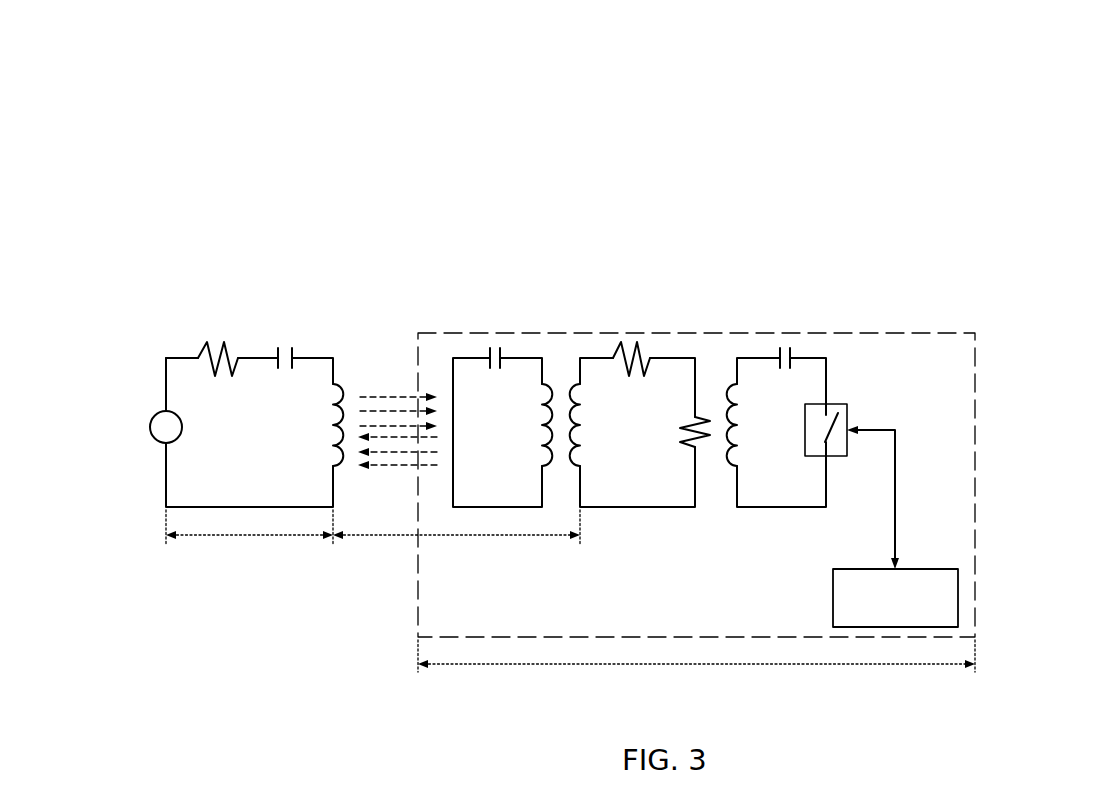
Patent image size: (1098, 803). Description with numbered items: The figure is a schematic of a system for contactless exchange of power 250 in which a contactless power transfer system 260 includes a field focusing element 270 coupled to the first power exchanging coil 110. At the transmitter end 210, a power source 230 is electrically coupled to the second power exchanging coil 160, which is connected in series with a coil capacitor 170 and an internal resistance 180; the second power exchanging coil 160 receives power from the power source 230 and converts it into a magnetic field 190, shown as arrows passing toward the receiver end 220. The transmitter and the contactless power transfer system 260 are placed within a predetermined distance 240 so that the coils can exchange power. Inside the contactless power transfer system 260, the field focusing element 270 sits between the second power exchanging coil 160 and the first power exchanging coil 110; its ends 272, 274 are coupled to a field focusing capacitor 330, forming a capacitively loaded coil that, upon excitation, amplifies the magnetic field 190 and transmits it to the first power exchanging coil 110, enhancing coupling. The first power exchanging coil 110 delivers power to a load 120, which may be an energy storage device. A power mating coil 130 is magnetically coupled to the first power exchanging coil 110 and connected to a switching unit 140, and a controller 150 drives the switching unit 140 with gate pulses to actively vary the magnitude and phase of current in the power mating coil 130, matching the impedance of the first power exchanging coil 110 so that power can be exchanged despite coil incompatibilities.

The first power exchanging coil 110 is at (671, 357).
The load 120 is at (681, 427).
The power mating coil 130 is at (805, 357).
The switching unit 140 is at (849, 407).
The controller 150 is at (931, 568).
The second power exchanging coil 160 is at (186, 357).
The coil capacitor 170 is at (292, 350).
The resistance 180 is at (226, 350).
The magnetic field 190 is at (370, 392).
The transmitter end 210 is at (244, 444).
The receiver end 220 is at (696, 500).
The power source 230 is at (184, 427).
The predetermined distance 240 is at (386, 540).
The system for contactless exchange of power 250 is at (982, 208).
The contactless power transfer system 260 is at (917, 332).
The field focusing element 270 is at (518, 357).
The end of field focusing element 272 is at (489, 370).
The end of field focusing element 274 is at (501, 370).
The field focusing capacitor 330 is at (485, 352).